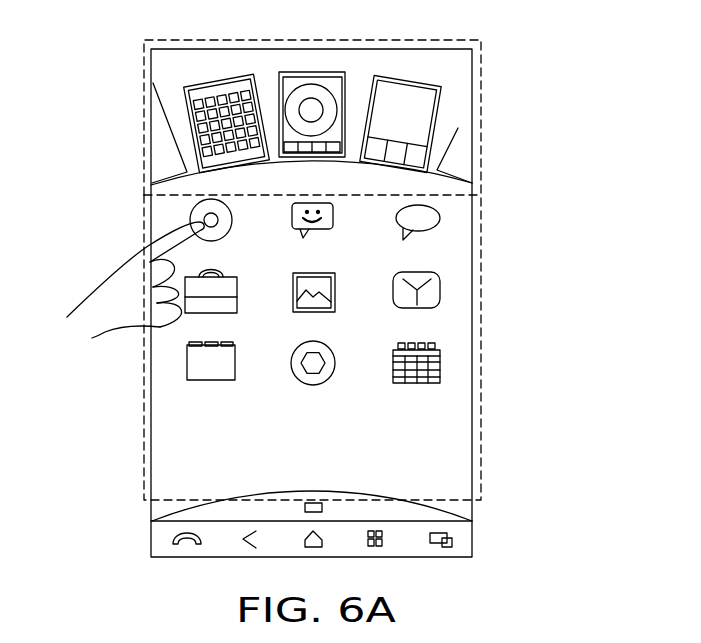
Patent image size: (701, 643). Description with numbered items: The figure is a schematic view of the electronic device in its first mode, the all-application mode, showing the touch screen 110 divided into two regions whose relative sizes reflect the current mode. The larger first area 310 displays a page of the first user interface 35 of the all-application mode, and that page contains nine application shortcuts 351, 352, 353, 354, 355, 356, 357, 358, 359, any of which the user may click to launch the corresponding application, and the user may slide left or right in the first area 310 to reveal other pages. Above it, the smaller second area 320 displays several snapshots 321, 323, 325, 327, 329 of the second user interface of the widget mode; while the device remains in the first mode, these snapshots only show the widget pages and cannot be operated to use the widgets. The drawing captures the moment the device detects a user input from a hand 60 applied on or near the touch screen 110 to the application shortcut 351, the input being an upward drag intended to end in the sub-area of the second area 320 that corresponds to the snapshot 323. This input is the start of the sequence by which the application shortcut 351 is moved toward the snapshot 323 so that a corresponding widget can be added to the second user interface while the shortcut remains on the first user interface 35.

The first user interface 35 is at (457, 462).
The hand 60 is at (113, 300).
The touch screen 110 is at (158, 542).
The first area 310 is at (480, 327).
The second area 320 is at (480, 127).
The snapshot 321 is at (212, 84).
The snapshot 323 is at (315, 82).
The snapshot 325 is at (408, 97).
The snapshot 327 is at (162, 123).
The snapshot 329 is at (458, 128).
The application shortcut 351 is at (190, 222).
The application shortcut 352 is at (185, 315).
The application shortcut 353 is at (187, 371).
The application shortcut 354 is at (292, 218).
The application shortcut 355 is at (293, 292).
The application shortcut 356 is at (293, 368).
The application shortcut 357 is at (440, 220).
The application shortcut 358 is at (440, 288).
The application shortcut 359 is at (440, 370).